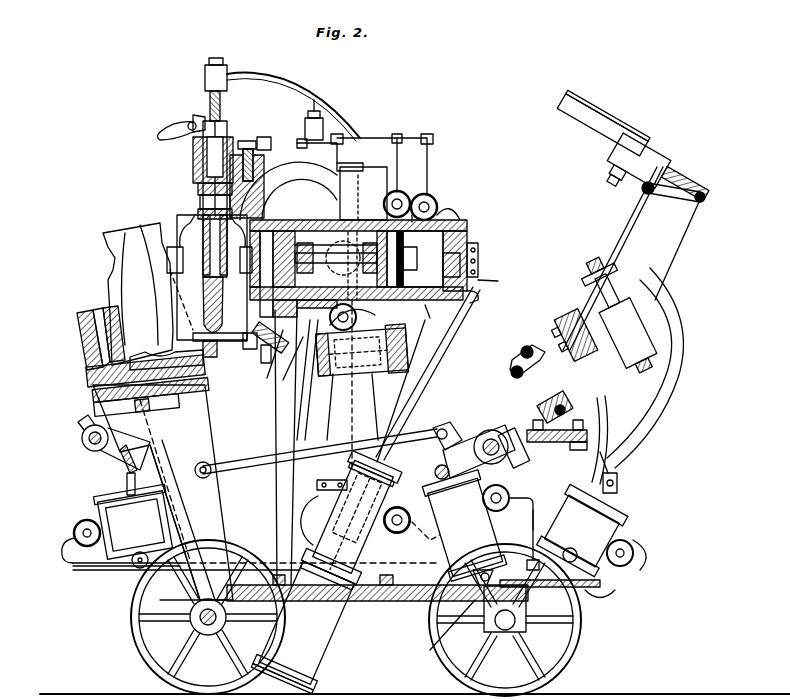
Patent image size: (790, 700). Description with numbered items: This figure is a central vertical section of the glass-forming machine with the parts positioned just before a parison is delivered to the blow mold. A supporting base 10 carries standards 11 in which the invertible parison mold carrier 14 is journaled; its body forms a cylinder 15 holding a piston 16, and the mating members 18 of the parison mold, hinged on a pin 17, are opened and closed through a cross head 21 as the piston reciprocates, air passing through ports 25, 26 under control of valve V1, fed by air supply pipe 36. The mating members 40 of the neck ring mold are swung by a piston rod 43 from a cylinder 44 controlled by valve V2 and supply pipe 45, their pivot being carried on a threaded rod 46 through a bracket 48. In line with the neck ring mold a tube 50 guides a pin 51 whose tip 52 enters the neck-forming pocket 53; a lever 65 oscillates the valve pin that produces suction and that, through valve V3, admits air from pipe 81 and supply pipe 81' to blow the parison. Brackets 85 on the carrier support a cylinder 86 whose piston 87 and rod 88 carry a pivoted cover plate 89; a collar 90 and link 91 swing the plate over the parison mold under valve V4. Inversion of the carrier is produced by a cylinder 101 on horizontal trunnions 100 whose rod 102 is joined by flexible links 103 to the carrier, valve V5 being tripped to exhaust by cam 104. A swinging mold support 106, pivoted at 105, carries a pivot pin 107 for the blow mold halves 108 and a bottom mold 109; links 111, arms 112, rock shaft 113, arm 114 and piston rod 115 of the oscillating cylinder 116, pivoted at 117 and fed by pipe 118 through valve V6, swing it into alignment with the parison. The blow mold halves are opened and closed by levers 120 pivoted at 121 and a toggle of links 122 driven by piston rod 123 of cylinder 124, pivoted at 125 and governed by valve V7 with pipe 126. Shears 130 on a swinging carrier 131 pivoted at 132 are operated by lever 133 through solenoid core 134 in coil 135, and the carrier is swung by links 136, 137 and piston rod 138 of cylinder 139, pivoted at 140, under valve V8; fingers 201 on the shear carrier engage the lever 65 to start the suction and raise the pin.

The supporting base 10 is at (408, 603).
The standards 11 is at (288, 499).
The parison mold carrier 14 is at (415, 328).
The cylinder 15 is at (440, 248).
The piston 16 is at (430, 305).
The pin 17 is at (248, 352).
The mating members of the parison mold 18 is at (215, 348).
The cross head 21 is at (305, 220).
The port 25 is at (455, 218).
The port 26 is at (408, 196).
The air supply pipe 36 is at (440, 190).
The mating members of the neck ring mold 40 is at (200, 202).
The piston rod 43 is at (303, 176).
The cylinder 44 is at (372, 182).
The supply pipe 45 is at (420, 138).
The threaded rod 46 is at (248, 140).
The bracket 48 is at (268, 137).
The tube 50 is at (193, 157).
The pin 51 is at (224, 127).
The tip 52 is at (198, 190).
The neck-forming pocket 53 is at (198, 214).
The lever 65 is at (190, 114).
The pipe 81 is at (314, 118).
The supply pipe 81' is at (298, 107).
The brackets 85 is at (398, 362).
The cylinder 86 is at (333, 407).
The piston 87 is at (365, 407).
The piston rod 88 is at (288, 366).
The cover plate 89 is at (272, 360).
The collar 90 is at (309, 380).
The link 91 is at (285, 328).
The horizontal trunnions 100 is at (342, 580).
The cylinder 101 is at (325, 585).
The rod 102 is at (438, 372).
The flexible links 103 is at (501, 283).
The cam 104 is at (432, 543).
The pivot 105 is at (165, 630).
The swinging mold support 106 is at (163, 492).
The pivot pin 107 is at (92, 362).
The blow mold halves 108 is at (110, 283).
The bottom mold 109 is at (155, 355).
The links 111 is at (262, 474).
The arms 112 is at (452, 424).
The rock shaft 113 is at (492, 440).
The arm 114 is at (486, 451).
The piston rod 115 is at (438, 468).
The oscillating cylinder 116 is at (465, 526).
The pivot 117 is at (432, 648).
The pipe 118 is at (538, 520).
The levers 120 is at (180, 455).
The pivot 121 is at (195, 545).
The toggle links 122 is at (108, 465).
The piston rod 123 is at (120, 493).
The cylinder 124 is at (134, 522).
The pivot 125 is at (137, 568).
The pipe 126 is at (92, 570).
The shears 130 is at (607, 115).
The swinging carrier 131 is at (603, 268).
The pivot 132 is at (585, 378).
The lever 133 is at (655, 200).
The solenoid core 134 is at (672, 292).
The coil 135 is at (650, 340).
The link 136 is at (630, 430).
The link 137 is at (622, 443).
The piston rod 138 is at (620, 492).
The cylinder 139 is at (600, 535).
The pivot 140 is at (600, 582).
The fingers 201 is at (522, 345).
The solenoid-operated valve V1 is at (440, 195).
The solenoid-operated valve V2 is at (403, 190).
The solenoid valve V3 is at (320, 117).
The valve V4 is at (375, 312).
The valve V5 is at (405, 535).
The valve V6 is at (522, 495).
The valve V7 is at (62, 560).
The valve V8 is at (652, 560).